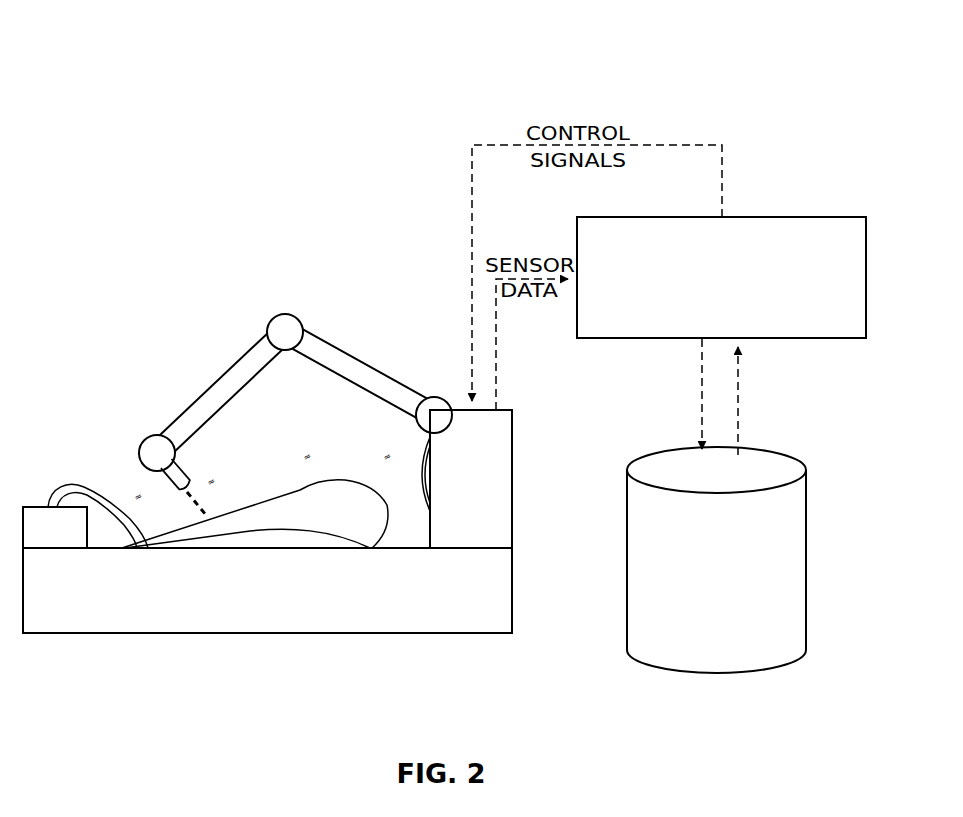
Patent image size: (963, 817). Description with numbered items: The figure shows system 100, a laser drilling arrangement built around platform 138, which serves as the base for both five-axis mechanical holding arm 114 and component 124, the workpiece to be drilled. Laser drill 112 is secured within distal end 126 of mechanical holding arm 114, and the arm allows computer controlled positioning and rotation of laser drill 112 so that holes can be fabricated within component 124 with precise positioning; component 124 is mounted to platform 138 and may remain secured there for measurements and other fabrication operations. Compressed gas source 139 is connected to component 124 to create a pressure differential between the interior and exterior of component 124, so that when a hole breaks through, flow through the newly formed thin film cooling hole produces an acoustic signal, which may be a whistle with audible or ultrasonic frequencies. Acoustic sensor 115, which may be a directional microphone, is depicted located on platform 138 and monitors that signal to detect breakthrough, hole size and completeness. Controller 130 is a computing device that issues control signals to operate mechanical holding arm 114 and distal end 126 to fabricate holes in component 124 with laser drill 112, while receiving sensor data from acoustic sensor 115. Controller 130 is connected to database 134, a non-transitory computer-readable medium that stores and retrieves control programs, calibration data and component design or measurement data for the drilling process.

The system 100 is at (104, 110).
The laser drill 112 is at (178, 466).
The five-axis mechanical holding arm 114 is at (350, 377).
The acoustic sensor 115 is at (427, 447).
The component 124 is at (340, 516).
The distal end 126 is at (155, 452).
The controller 130 is at (703, 300).
The database 134 is at (699, 600).
The platform 138 is at (248, 613).
The compressed gas source 139 is at (37, 536).